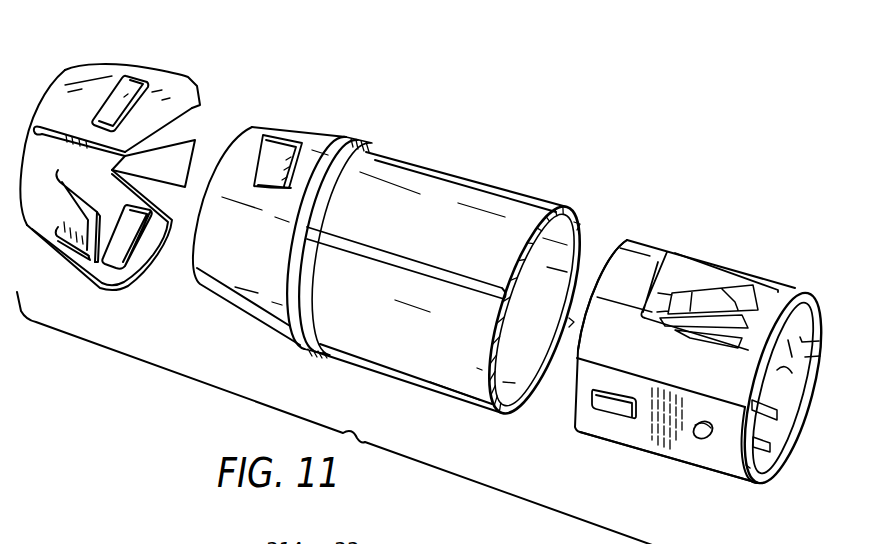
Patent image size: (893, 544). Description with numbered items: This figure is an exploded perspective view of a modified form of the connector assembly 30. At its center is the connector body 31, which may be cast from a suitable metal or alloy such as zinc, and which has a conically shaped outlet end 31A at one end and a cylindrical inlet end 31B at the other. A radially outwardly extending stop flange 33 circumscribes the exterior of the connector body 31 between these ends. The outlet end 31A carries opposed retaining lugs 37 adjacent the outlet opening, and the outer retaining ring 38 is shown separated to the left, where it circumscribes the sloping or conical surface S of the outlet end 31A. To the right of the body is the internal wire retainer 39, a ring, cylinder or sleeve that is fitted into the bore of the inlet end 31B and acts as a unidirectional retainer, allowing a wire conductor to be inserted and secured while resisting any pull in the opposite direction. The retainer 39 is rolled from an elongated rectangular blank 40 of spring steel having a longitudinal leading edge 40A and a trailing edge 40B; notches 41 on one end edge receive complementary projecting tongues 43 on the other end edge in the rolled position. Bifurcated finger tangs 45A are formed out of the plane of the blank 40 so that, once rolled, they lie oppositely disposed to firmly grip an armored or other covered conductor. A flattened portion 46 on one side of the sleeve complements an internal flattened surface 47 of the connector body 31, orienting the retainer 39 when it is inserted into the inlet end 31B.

The connector assembly 30 is at (377, 262).
The connector body 31 is at (362, 340).
The conically shaped outlet end 31A is at (262, 296).
The cylindrical inlet end 31B is at (453, 377).
The stop flange 33 is at (346, 140).
The retaining lugs 37 is at (285, 147).
The outer retaining ring 38 is at (125, 45).
The internal wire retainer 39 is at (719, 486).
The retainer blank 40 is at (690, 362).
The leading edge 40A is at (603, 260).
The trailing edge 40B is at (770, 482).
The notches 41 is at (781, 447).
The projecting tongues 43 is at (788, 345).
The finger tangs 45A is at (712, 290).
The flattened portion 46 is at (668, 423).
The internal flattened surface 47 is at (498, 366).
The conical surface S is at (239, 248).